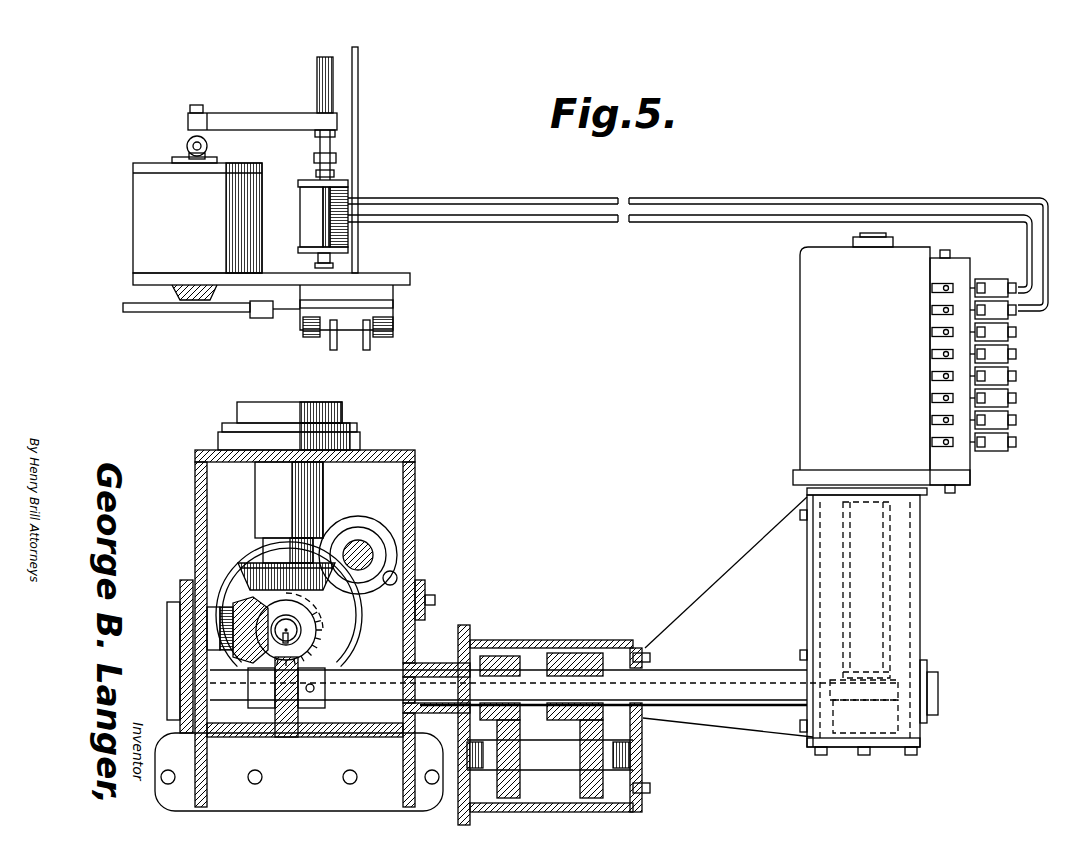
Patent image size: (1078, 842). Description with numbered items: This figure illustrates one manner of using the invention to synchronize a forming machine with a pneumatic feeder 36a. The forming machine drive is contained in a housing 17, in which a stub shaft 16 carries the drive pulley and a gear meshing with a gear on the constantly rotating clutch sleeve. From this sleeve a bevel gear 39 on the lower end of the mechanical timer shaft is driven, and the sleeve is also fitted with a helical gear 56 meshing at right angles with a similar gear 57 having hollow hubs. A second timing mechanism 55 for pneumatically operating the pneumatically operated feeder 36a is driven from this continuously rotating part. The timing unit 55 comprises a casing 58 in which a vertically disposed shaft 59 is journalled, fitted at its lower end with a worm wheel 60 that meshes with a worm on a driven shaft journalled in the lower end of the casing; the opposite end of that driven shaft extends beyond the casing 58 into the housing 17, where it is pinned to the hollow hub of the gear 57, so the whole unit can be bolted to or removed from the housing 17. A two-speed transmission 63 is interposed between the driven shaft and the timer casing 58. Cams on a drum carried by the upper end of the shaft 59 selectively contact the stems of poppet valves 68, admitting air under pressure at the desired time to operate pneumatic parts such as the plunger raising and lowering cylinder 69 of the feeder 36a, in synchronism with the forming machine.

The pneumatically operated feeder 36a is at (131, 237).
The plunger raising and lowering cylinder 69 is at (318, 208).
The second timing mechanism 55 is at (813, 323).
The poppet valves 68 is at (990, 277).
The casing 58 is at (920, 534).
The vertically disposed shaft 59 is at (875, 578).
The worm wheel 60 is at (898, 683).
The housing 17 is at (417, 498).
The stub shaft 16 is at (359, 543).
The bevel gear 39 is at (258, 571).
The helical gear 56 is at (312, 642).
The gear 57 is at (290, 723).
The two-speed transmission 63 is at (545, 641).